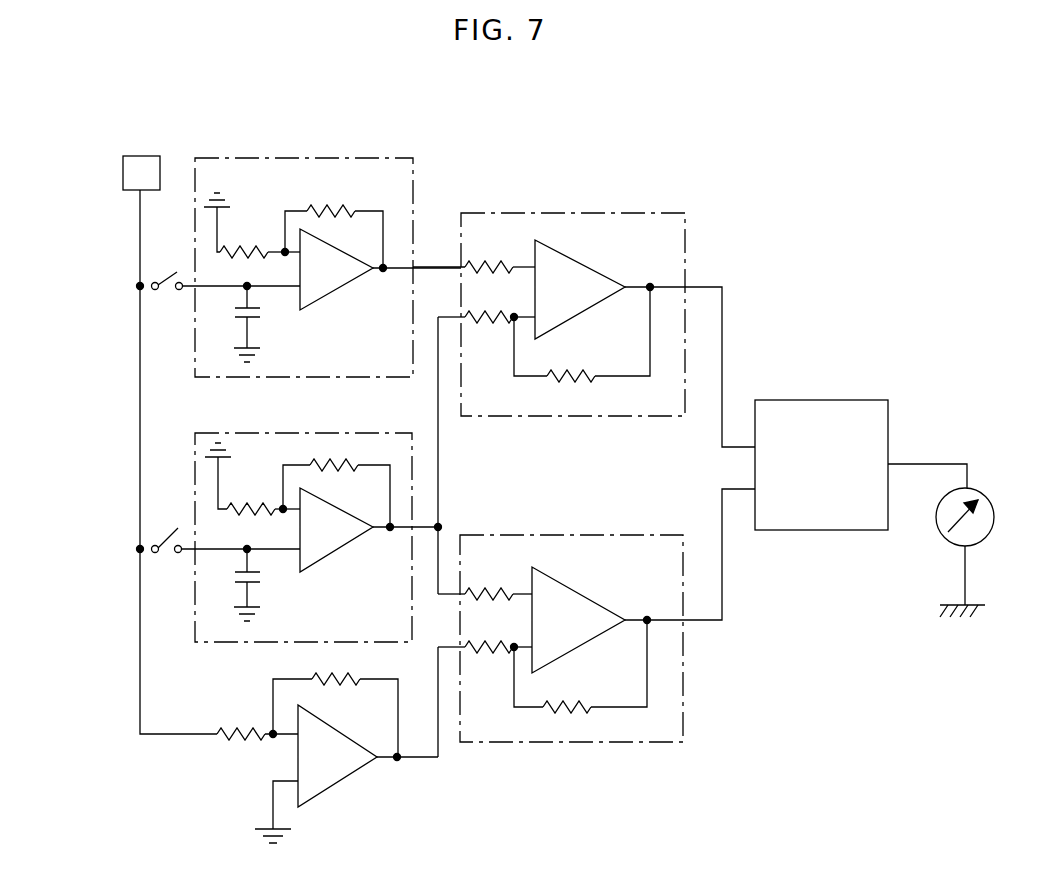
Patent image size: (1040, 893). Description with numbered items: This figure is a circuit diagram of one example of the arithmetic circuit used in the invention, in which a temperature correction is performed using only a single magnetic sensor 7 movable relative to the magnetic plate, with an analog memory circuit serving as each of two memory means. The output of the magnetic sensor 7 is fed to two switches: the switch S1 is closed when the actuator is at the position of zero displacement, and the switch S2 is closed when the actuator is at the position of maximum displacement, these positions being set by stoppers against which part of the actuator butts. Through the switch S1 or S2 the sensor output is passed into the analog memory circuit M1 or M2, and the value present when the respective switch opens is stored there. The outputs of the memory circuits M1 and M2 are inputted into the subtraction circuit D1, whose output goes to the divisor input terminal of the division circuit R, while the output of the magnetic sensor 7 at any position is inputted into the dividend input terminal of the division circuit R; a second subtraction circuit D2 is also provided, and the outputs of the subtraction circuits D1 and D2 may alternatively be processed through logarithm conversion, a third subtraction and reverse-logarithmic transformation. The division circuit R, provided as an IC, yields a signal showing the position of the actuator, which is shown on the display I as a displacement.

The magnetic sensor 7 is at (123, 172).
The switch S2 is at (172, 270).
The switch S1 is at (177, 528).
The analog memory circuit M2 is at (297, 158).
The analog memory circuit M1 is at (232, 433).
The subtraction circuit D1 is at (495, 213).
The subtraction circuit D2 is at (683, 702).
The division circuit R is at (803, 399).
The display I is at (982, 493).